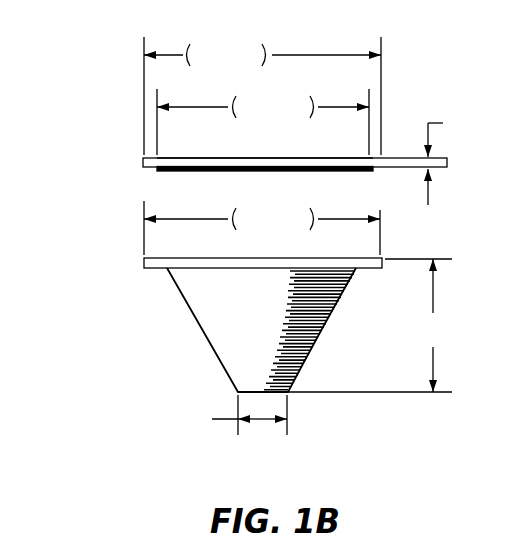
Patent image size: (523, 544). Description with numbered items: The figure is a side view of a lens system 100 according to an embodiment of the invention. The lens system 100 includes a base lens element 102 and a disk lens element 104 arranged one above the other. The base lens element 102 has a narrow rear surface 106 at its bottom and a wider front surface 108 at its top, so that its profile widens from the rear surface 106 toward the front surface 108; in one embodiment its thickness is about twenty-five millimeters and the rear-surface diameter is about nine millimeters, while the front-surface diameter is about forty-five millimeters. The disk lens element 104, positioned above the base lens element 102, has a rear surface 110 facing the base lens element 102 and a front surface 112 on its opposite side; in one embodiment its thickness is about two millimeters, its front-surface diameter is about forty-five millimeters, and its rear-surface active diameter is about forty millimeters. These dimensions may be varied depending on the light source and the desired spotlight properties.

The lens system 100 is at (82, 100).
The base lens element 102 is at (212, 350).
The disk lens element 104 is at (143, 162).
The rear surface 106 is at (257, 392).
The front surface 108 is at (162, 258).
The rear surface 110 is at (333, 171).
The front surface 112 is at (212, 158).